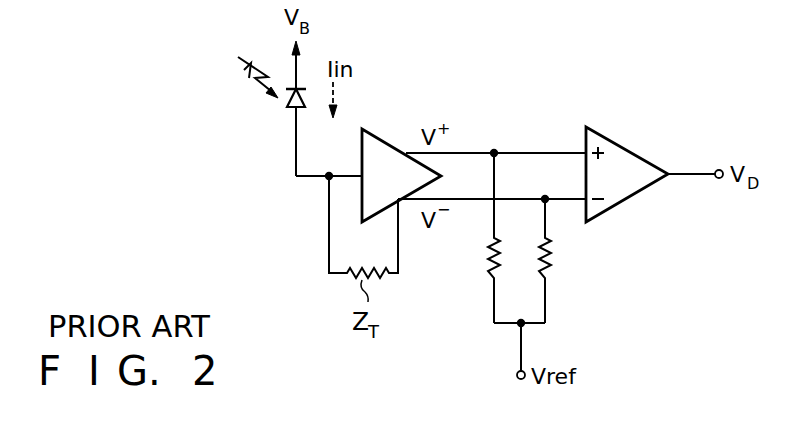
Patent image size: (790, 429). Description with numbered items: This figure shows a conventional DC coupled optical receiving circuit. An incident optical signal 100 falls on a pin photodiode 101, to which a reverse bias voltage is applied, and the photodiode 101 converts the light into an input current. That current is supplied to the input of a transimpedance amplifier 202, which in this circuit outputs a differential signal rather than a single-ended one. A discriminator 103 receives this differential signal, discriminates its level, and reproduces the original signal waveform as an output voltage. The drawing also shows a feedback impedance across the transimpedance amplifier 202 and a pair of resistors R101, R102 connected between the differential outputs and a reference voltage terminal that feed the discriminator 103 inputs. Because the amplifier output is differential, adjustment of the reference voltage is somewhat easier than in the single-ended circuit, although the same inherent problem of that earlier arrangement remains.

The incident optical signal 100 is at (241, 82).
The pin photodiode 101 is at (288, 107).
The transimpedance amplifier 202 is at (397, 146).
The discriminator 103 is at (653, 163).
The resistor R101 is at (485, 254).
The resistor R102 is at (552, 263).